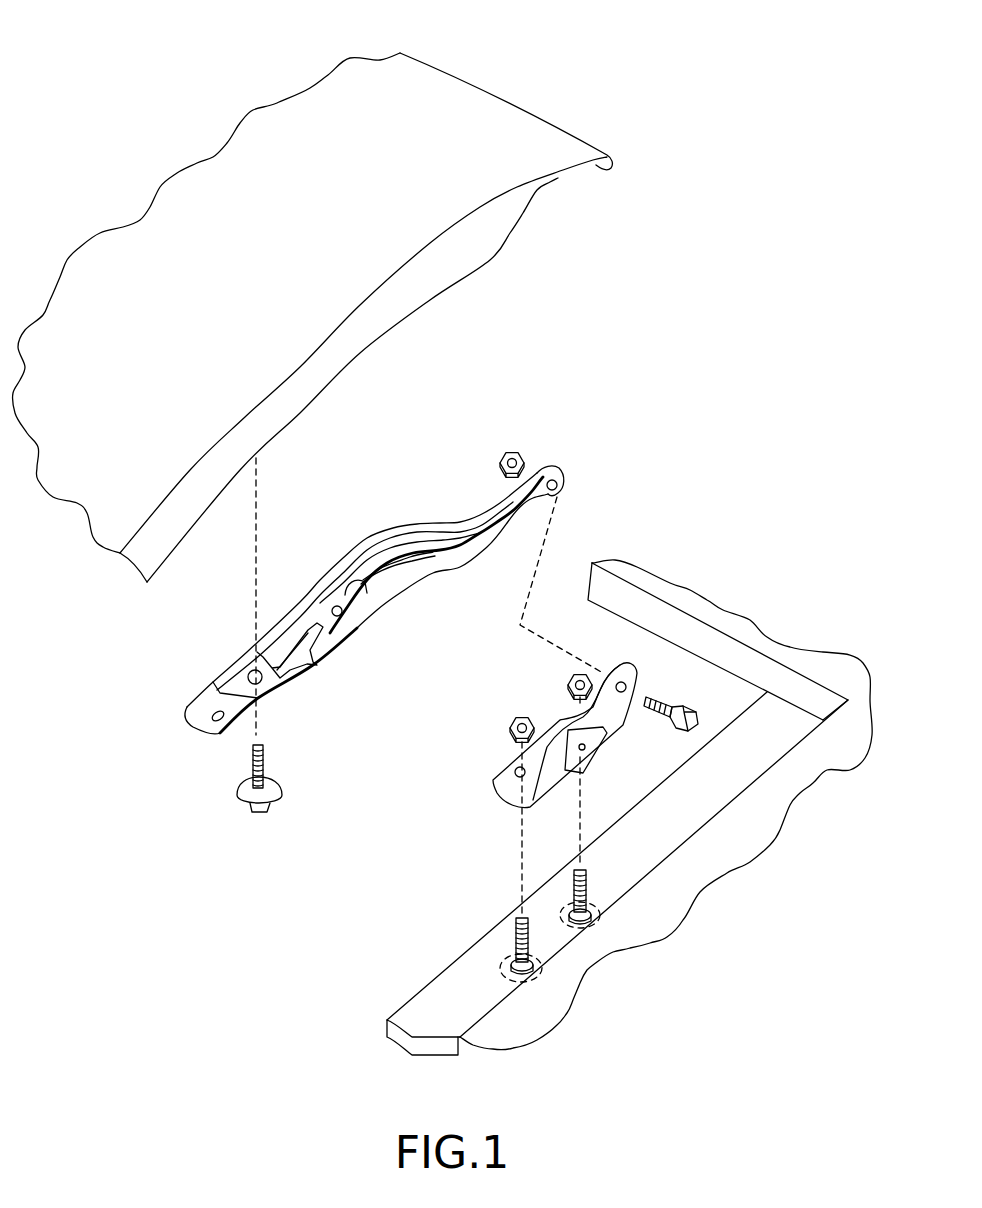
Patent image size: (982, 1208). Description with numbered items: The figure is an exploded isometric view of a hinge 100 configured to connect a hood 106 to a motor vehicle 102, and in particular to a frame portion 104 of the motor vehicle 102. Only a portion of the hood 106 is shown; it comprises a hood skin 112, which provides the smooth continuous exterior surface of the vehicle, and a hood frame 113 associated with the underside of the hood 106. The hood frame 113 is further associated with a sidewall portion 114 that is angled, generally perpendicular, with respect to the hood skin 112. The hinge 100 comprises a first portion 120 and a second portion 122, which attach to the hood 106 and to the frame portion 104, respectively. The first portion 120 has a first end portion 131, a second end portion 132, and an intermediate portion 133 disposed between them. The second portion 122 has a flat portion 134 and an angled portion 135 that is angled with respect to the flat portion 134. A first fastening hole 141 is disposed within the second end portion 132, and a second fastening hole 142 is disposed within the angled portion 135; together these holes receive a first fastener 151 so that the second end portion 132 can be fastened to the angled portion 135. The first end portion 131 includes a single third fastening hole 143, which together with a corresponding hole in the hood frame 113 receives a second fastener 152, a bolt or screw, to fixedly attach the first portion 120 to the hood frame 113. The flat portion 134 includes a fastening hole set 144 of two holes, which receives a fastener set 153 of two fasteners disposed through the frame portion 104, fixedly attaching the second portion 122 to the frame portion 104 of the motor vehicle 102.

The hinge 100 is at (610, 342).
The motor vehicle 102 is at (770, 828).
The frame portion 104 is at (420, 1023).
The hood 106 is at (507, 98).
The hood skin 112 is at (427, 80).
The hood frame 113 is at (553, 182).
The sidewall portion 114 is at (492, 258).
The first portion 120 is at (375, 619).
The second portion 122 is at (545, 745).
The first end portion 131 is at (168, 692).
The second end portion 132 is at (536, 457).
The intermediate portion 133 is at (449, 455).
The flat portion 134 is at (482, 772).
The angled portion 135 is at (638, 718).
The first fastening hole 141 is at (560, 487).
The second fastening hole 142 is at (627, 677).
The third fastening hole 143 is at (262, 677).
The fastening hole set 144 is at (513, 768).
The first fastener 151 is at (668, 707).
The second fastener 152 is at (243, 797).
The fastener set 153 is at (580, 863).